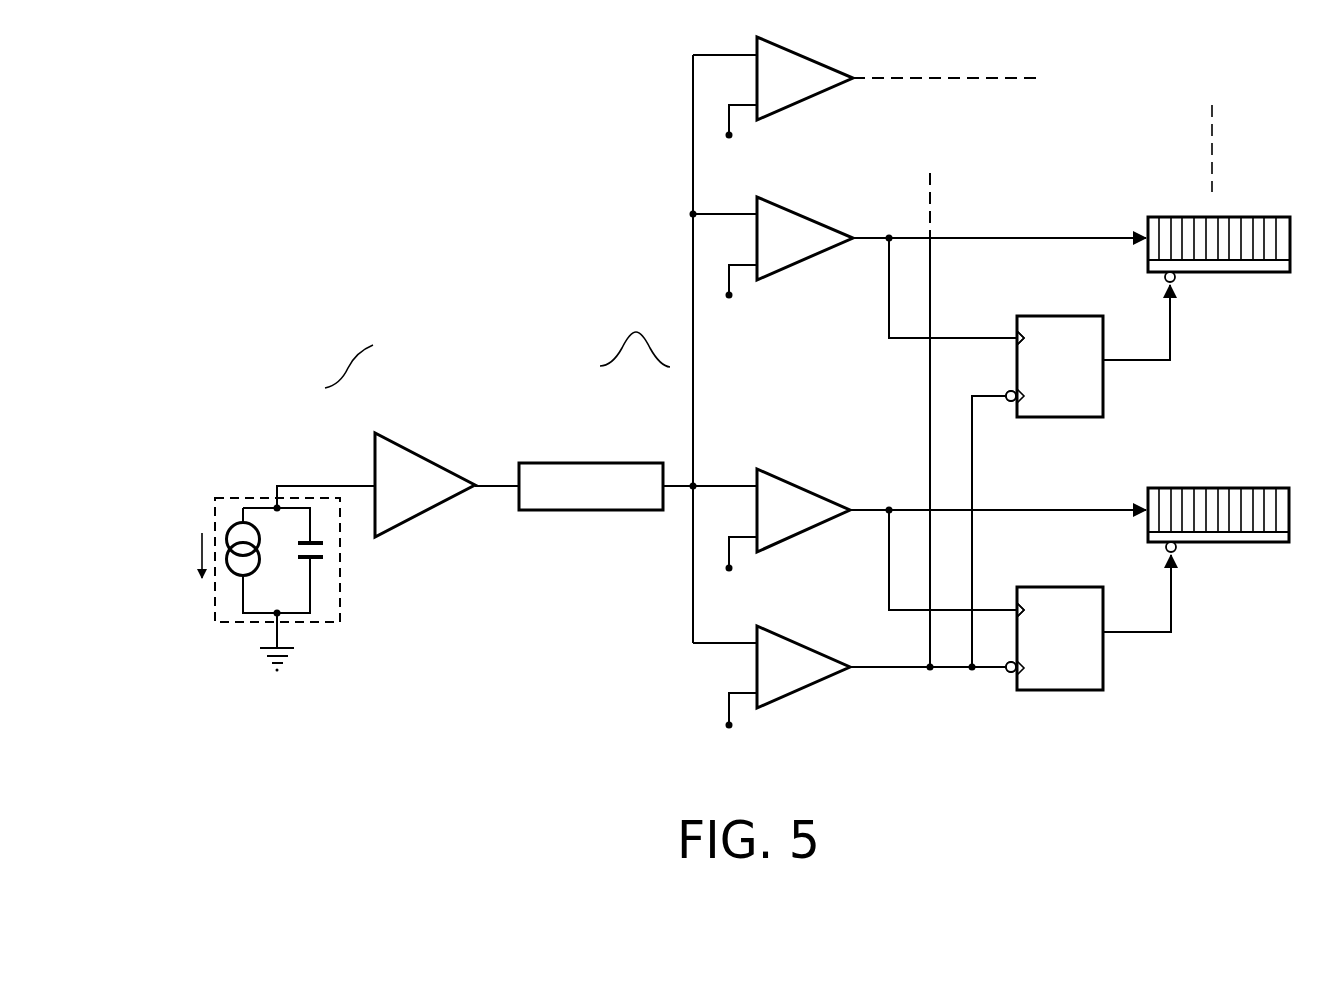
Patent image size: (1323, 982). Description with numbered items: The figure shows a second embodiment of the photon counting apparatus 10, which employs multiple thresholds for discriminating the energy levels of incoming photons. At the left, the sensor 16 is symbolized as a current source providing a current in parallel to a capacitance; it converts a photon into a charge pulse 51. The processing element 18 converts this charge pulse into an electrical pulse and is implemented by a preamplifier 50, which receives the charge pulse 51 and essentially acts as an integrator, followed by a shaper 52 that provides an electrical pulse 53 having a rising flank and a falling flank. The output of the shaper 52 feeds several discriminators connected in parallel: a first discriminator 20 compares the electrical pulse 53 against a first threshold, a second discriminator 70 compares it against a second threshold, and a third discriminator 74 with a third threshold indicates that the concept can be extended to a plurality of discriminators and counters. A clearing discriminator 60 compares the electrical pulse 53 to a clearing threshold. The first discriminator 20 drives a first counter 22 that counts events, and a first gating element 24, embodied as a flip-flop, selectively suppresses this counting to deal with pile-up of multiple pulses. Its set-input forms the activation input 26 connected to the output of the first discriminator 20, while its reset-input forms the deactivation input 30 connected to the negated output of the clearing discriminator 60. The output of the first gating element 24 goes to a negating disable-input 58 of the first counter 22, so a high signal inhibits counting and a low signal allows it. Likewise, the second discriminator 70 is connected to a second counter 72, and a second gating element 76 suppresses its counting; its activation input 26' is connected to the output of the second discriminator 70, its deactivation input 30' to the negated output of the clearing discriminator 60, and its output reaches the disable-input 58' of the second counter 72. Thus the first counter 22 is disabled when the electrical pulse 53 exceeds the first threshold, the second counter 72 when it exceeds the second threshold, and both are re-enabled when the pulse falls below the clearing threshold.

The apparatus 10 is at (299, 80).
The sensor 16 is at (266, 418).
The charge pulse 51 is at (322, 455).
The preamplifier 50 is at (424, 496).
The processing element 18 is at (500, 383).
The shaper 52 is at (604, 500).
The electrical pulse 53 is at (660, 443).
The third discriminator 74 is at (797, 90).
The second discriminator 70 is at (797, 250).
The first discriminator 20 is at (797, 522).
The clearing discriminator 60 is at (797, 679).
The second gating element 76 is at (1103, 407).
The first gating element 24 is at (1103, 678).
The activation input 26 is at (1006, 584).
The activation input 26' is at (1004, 311).
The deactivation input 30 is at (1002, 699).
The deactivation input 30' is at (1000, 426).
The second counter 72 is at (1272, 217).
The first counter 22 is at (1226, 488).
The disable-input 58 is at (1203, 562).
The disable-input 58' is at (1205, 291).